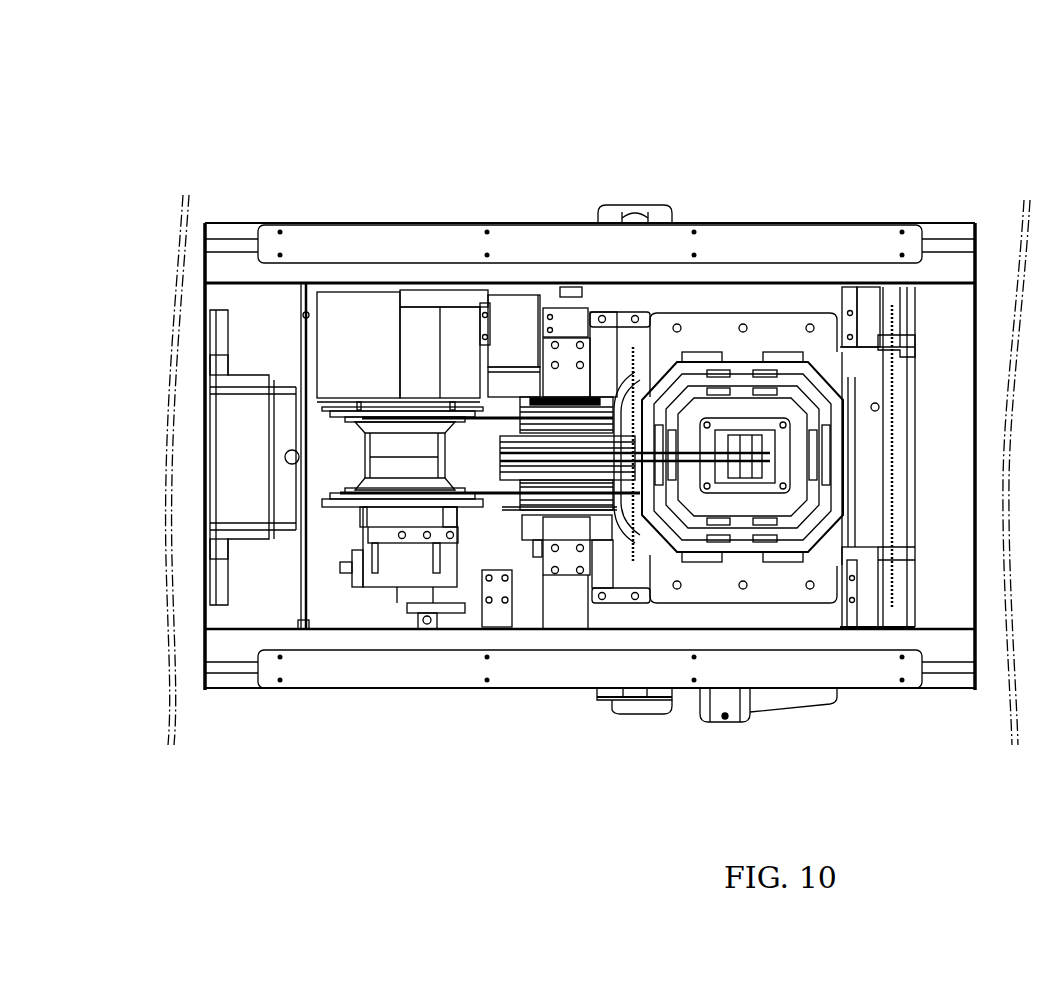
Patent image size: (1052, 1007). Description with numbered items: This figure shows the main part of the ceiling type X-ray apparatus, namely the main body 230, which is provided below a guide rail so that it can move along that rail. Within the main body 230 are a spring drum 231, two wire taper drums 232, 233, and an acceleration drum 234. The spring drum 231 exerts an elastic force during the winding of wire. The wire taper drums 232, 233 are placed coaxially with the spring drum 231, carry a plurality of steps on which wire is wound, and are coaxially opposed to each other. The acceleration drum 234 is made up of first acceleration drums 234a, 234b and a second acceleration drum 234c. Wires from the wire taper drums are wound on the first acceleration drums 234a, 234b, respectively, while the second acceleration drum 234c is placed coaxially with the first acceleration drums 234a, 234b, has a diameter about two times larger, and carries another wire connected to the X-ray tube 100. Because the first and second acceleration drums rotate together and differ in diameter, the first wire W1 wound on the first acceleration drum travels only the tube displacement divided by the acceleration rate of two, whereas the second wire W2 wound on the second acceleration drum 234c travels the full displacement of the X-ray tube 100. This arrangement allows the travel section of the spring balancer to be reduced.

The main body 230 is at (871, 128).
The spring drum 231 is at (455, 337).
The wire taper drum 232 is at (370, 423).
The wire taper drum 233 is at (365, 505).
The acceleration drum 234 is at (612, 818).
The first acceleration drum 234a is at (527, 497).
The first acceleration drum 234b is at (560, 470).
The second acceleration drum 234c is at (587, 490).
The X-ray tube 100 is at (758, 378).
The first wire W1 is at (502, 420).
The second wire W2 is at (657, 422).